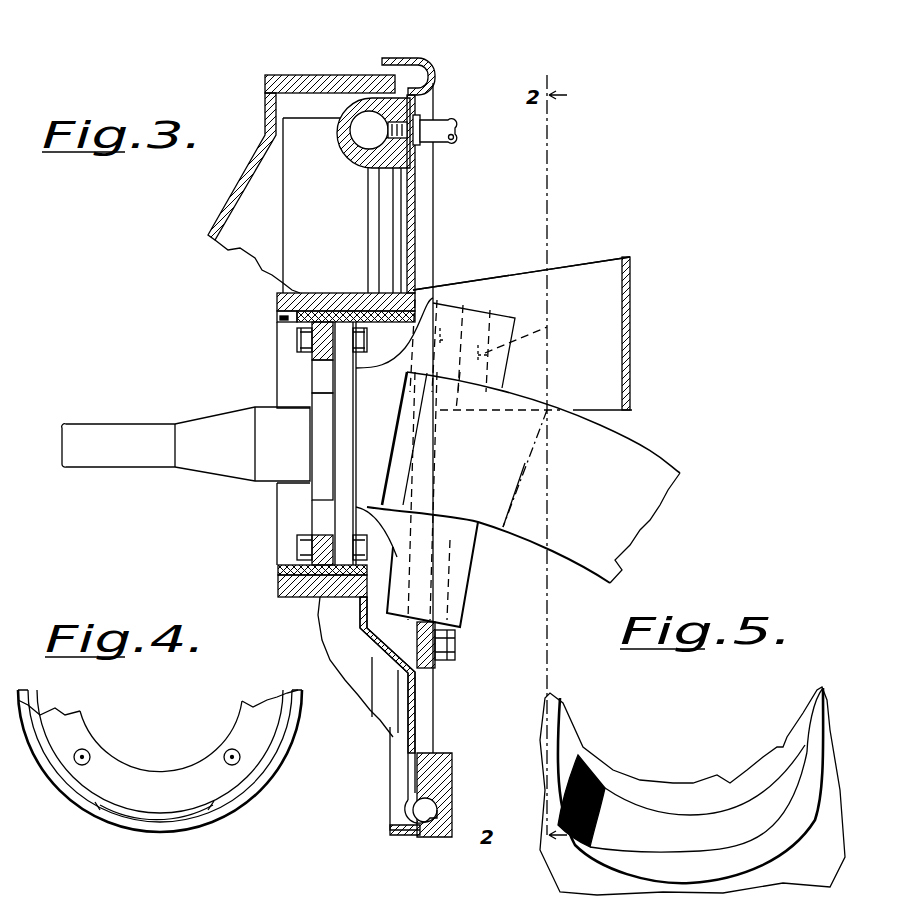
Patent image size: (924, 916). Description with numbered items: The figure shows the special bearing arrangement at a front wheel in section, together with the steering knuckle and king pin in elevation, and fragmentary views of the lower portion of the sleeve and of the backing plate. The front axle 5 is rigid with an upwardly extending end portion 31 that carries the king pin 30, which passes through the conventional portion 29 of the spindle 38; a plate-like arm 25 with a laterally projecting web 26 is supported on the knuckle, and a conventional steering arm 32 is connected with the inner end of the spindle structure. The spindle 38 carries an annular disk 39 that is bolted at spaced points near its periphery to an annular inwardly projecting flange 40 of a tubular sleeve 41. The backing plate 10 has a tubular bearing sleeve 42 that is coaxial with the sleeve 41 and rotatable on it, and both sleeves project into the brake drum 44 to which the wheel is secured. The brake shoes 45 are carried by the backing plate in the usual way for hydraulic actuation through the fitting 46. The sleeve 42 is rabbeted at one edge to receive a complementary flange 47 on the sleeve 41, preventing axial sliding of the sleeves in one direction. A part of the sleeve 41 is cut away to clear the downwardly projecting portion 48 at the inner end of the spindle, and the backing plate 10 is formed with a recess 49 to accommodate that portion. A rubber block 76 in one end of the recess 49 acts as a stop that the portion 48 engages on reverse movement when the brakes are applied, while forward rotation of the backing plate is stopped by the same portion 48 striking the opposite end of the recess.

In FIG. 3, the front axle 5 is at (682, 473).
In FIG. 3, the backing plate 10 is at (417, 208).
In FIG. 3, the plate-like arm 25 is at (631, 297).
In FIG. 3, the web 26 is at (595, 272).
In FIG. 3, the conventional portion of the spindle 29 is at (503, 325).
In FIG. 3, the king pin 30 is at (552, 327).
In FIG. 3, the end portion of the front axle 31 is at (460, 407).
In FIG. 3, the steering arm 32 is at (457, 655).
In FIG. 3, the spindle 38 is at (277, 472).
In FIG. 3, the annular disk 39 is at (343, 368).
In FIG. 3, the annular inwardly projecting flange 40 is at (297, 340).
In FIG. 4, the annular inwardly projecting flange 40 is at (175, 773).
In FIG. 3, the tubular sleeve 41 is at (382, 318).
In FIG. 4, the tubular sleeve 41 is at (267, 747).
In FIG. 3, the tubular bearing sleeve 42 is at (343, 300).
In FIG. 3, the brake drum 44 is at (325, 75).
In FIG. 3, the brake shoes 45 is at (297, 212).
In FIG. 3, the fitting 46 is at (443, 120).
In FIG. 3, the flange 47 is at (278, 308).
In FIG. 3, the downwardly projecting portion 48 is at (460, 588).
In FIG. 5, the recess 49 is at (652, 830).
In FIG. 5, the rubber block 76 is at (597, 772).